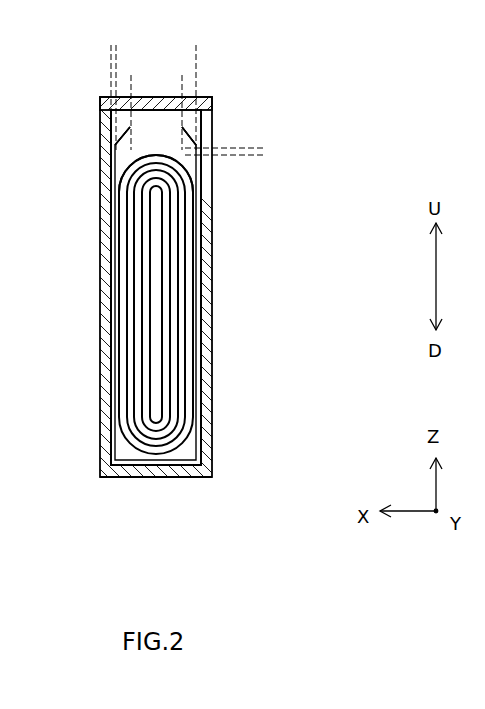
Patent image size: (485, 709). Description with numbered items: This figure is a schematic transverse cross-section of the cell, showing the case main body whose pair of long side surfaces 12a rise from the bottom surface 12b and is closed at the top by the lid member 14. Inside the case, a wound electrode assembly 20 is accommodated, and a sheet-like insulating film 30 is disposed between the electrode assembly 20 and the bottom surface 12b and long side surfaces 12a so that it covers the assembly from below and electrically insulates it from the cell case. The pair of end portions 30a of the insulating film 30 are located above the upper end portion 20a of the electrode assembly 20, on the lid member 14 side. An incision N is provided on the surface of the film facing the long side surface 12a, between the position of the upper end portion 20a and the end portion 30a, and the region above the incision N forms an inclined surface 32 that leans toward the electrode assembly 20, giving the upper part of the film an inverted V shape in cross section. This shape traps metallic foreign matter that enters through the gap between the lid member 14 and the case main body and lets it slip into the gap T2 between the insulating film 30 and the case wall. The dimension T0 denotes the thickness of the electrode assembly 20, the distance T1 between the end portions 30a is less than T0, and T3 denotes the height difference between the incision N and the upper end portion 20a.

The long side surface 12a is at (103, 371).
The bottom surface 12b is at (189, 478).
The lid member 14 is at (203, 96).
The electrode assembly 20 is at (121, 446).
The upper end portion of the electrode assembly 20a is at (150, 150).
The insulating film 30 is at (115, 425).
The end portion of the insulating film 30a is at (128, 125).
The inclined surface 32 is at (123, 136).
The incision N is at (105, 150).
The dimension of the electrode assembly in the thickness direction T0 is at (196, 51).
The distance between the pair of end portions T1 is at (182, 82).
The gap between the insulating film and the case main body T2 is at (135, 72).
The difference between the incision position and the electrode assembly end portion T3 is at (255, 130).